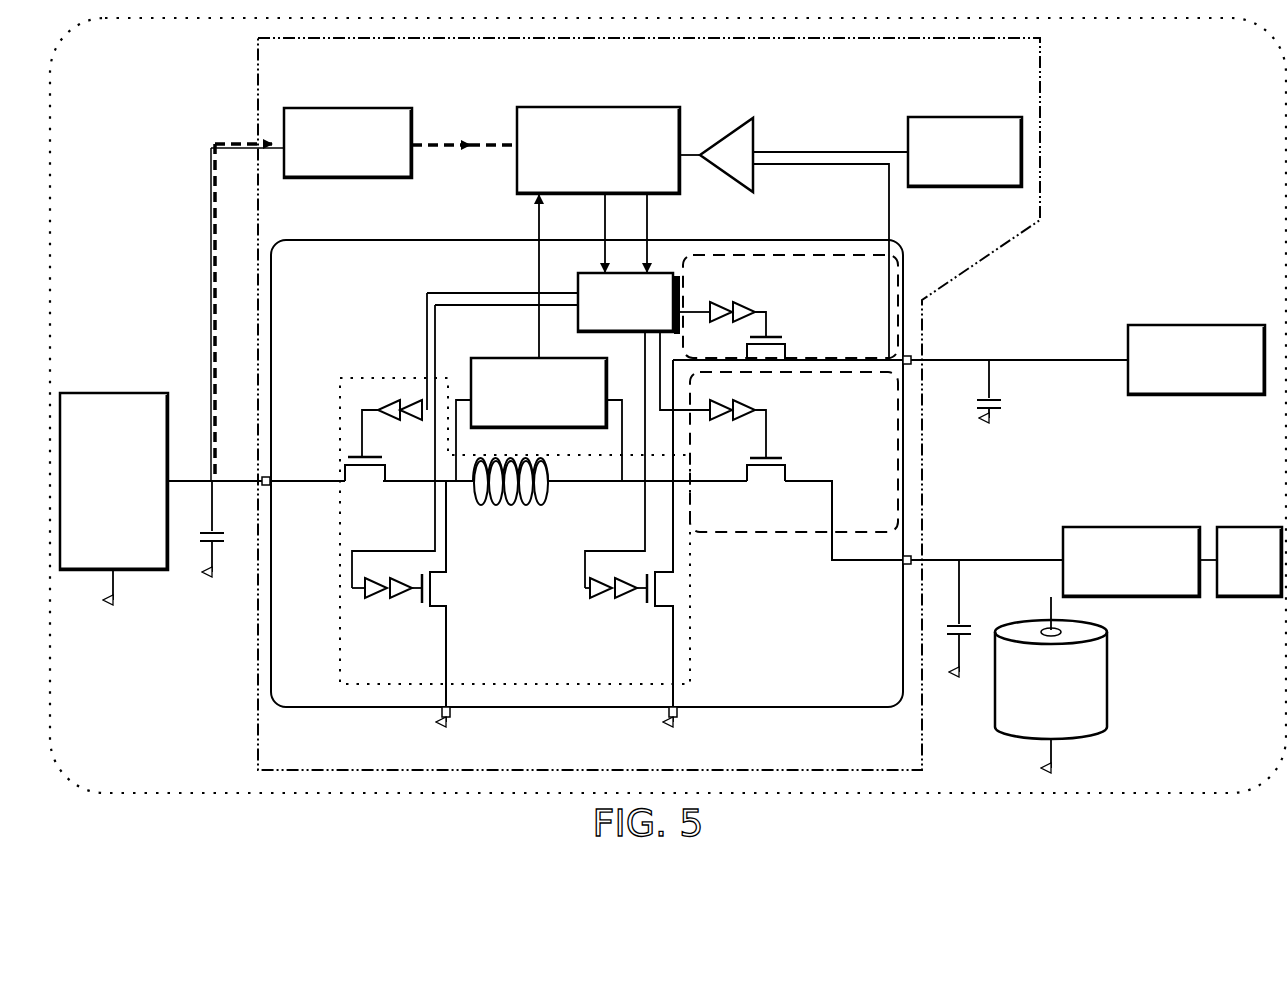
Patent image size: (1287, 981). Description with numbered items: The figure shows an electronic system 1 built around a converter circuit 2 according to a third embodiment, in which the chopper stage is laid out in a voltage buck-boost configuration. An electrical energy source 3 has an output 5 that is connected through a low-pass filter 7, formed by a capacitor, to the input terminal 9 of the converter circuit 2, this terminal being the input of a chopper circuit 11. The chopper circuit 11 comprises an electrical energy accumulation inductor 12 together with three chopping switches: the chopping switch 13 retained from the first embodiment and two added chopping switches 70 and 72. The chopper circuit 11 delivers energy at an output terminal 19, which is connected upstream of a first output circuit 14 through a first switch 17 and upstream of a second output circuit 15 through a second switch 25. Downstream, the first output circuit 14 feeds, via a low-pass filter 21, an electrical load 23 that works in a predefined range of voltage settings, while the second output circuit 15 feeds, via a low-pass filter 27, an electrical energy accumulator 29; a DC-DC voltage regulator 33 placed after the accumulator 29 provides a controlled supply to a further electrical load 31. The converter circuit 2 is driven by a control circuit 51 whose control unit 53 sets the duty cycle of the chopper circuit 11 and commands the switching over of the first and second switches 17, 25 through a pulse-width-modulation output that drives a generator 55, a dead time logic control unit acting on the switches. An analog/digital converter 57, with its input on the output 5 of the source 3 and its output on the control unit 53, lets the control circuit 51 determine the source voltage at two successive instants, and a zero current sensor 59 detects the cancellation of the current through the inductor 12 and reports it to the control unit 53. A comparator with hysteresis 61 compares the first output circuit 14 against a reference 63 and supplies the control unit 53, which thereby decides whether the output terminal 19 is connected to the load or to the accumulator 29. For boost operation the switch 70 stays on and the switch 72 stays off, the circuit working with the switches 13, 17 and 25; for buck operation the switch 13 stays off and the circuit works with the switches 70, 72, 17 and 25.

The electronic system 1 is at (1165, 210).
The converter circuit 2 is at (347, 753).
The electrical energy source 3 is at (108, 516).
The output 5 is at (170, 478).
The low-pass filter 7 is at (212, 588).
The input terminal 9 is at (272, 478).
The chopper circuit 11 is at (594, 677).
The electrical energy accumulation inductor 12 is at (550, 490).
The chopping switch 13 is at (690, 600).
The first output circuit 14 is at (833, 302).
The second output circuit 15 is at (849, 449).
The first switch 17 is at (784, 341).
The output terminal 19 is at (679, 494).
The low-pass filter 21 is at (1001, 405).
The electrical load 23 is at (1185, 380).
The second switch 25 is at (786, 460).
The low-pass filter 27 is at (950, 622).
The electrical energy accumulator 29 is at (1040, 721).
The electrical load 31 is at (1239, 582).
The DC-DC voltage regulator 33 is at (1120, 591).
The control circuit 51 is at (672, 95).
The control unit 53 is at (587, 172).
The generator 55 is at (614, 322).
The analog/digital converter 57 is at (337, 172).
The zero current sensor 59 is at (528, 422).
The comparator with hysteresis 61 is at (756, 138).
The reference 63 is at (954, 172).
The chopping switch 70 is at (363, 486).
The chopping switch 72 is at (445, 594).